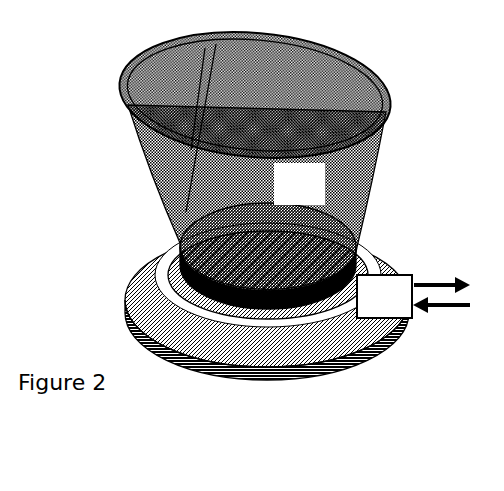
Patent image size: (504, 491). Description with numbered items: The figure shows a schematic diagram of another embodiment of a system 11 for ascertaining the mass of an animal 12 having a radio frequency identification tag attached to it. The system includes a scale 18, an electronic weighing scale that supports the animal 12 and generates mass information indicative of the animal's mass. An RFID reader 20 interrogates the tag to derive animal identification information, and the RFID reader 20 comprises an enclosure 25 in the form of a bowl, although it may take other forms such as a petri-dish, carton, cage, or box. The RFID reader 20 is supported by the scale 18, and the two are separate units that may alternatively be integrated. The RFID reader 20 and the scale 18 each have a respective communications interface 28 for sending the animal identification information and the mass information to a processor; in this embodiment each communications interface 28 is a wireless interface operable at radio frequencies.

The system 11 is at (102, 58).
The animal 12 is at (258, 221).
The scale 18 is at (147, 296).
The RFID reader 20 is at (286, 198).
The enclosure 25 is at (349, 66).
The communications interface 28 is at (398, 312).